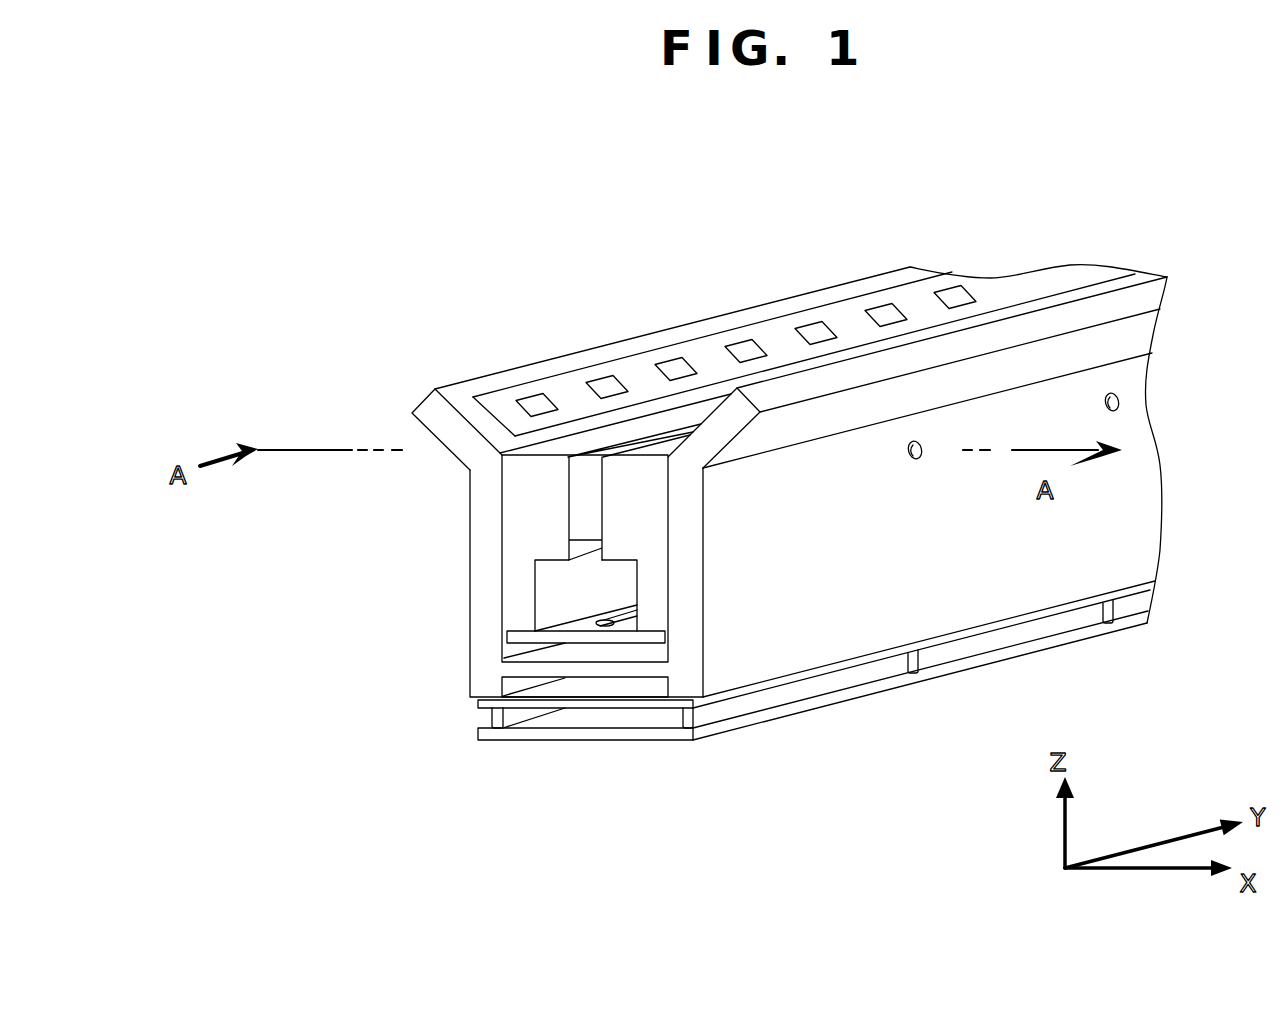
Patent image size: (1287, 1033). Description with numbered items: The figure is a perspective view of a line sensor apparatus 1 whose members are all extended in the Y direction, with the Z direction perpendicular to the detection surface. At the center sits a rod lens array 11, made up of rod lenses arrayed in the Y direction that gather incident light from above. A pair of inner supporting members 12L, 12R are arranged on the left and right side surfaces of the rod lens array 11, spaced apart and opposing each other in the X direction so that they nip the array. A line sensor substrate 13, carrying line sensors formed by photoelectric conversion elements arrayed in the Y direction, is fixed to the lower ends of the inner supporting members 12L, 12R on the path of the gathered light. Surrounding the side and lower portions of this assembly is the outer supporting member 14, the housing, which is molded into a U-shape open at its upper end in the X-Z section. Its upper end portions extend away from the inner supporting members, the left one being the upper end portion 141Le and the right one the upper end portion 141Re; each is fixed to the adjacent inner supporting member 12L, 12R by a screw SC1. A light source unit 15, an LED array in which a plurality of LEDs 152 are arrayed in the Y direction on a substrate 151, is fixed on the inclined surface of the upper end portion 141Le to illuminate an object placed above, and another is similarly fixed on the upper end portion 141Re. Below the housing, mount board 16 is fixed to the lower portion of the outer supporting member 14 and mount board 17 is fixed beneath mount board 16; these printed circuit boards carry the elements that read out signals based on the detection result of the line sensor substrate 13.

The line sensor apparatus 1 is at (376, 234).
The rod lens array 11 is at (582, 505).
The inner supporting member 12L is at (520, 535).
The inner supporting member 12R is at (647, 533).
The line sensor substrate 13 is at (593, 643).
The outer supporting member 14 is at (796, 474).
The left-side upper end portion 141Le is at (423, 397).
The right-side upper end portion 141Re is at (1092, 313).
The light source unit 15 is at (785, 287).
The substrate 151 is at (488, 397).
The LED 152 is at (537, 395).
The mount board 16 is at (478, 702).
The mount board 17 is at (512, 737).
The screw SC1 is at (920, 443).